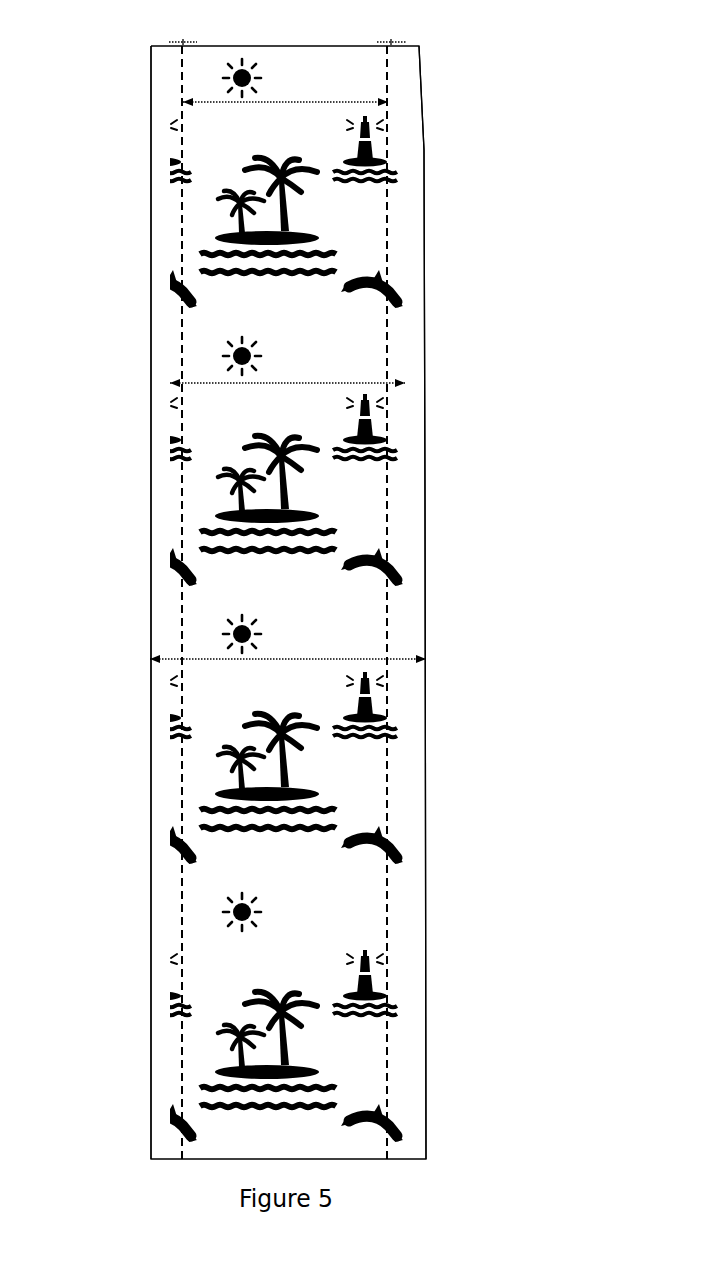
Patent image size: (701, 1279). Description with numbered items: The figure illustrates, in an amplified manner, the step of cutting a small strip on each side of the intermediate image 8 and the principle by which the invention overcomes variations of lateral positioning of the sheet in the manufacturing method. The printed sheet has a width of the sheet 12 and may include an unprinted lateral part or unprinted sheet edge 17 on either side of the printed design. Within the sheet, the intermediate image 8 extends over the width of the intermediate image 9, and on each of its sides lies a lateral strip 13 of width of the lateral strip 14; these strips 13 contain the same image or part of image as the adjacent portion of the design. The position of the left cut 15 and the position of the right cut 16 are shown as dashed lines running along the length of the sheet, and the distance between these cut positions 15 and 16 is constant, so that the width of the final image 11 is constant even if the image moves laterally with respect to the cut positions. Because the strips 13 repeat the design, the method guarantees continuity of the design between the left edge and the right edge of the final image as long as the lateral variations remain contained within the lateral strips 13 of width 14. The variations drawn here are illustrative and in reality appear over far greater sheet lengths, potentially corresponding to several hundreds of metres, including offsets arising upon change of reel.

The intermediate image 8 is at (364, 189).
The width of the intermediate image 9 is at (217, 383).
The width of the final image 11 is at (218, 103).
The width of the sheet 12 is at (200, 660).
The lateral strip 13 is at (172, 497).
The width of the lateral strip 14 is at (286, 25).
The position of the left cut 15 is at (180, 224).
The position of the right cut 16 is at (388, 216).
The unprinted sheet edge 17 is at (158, 803).